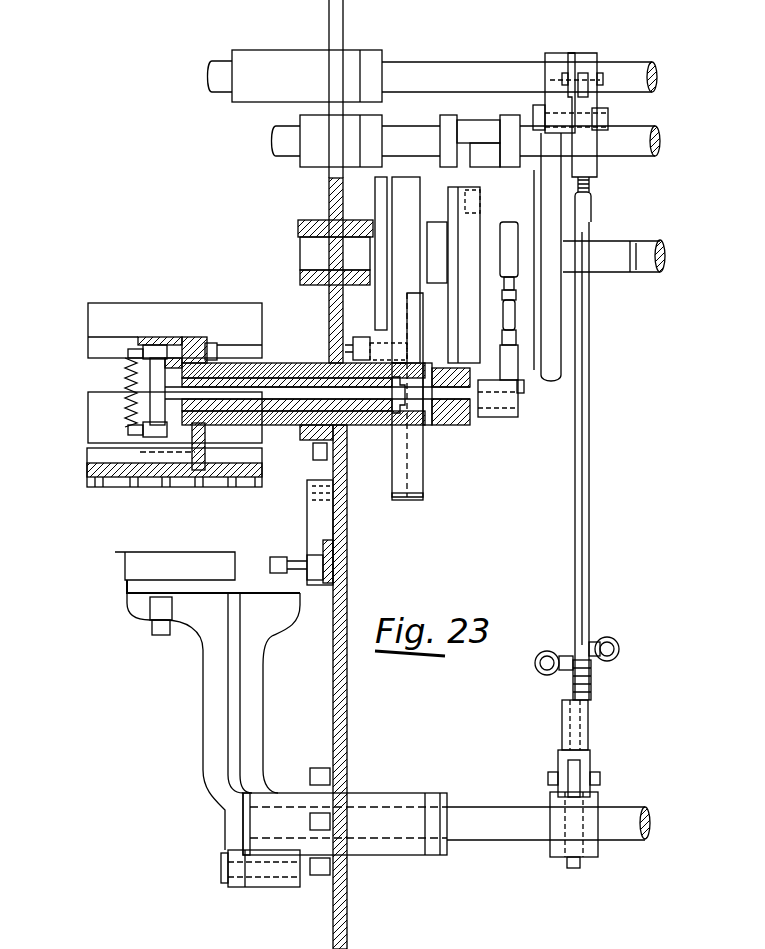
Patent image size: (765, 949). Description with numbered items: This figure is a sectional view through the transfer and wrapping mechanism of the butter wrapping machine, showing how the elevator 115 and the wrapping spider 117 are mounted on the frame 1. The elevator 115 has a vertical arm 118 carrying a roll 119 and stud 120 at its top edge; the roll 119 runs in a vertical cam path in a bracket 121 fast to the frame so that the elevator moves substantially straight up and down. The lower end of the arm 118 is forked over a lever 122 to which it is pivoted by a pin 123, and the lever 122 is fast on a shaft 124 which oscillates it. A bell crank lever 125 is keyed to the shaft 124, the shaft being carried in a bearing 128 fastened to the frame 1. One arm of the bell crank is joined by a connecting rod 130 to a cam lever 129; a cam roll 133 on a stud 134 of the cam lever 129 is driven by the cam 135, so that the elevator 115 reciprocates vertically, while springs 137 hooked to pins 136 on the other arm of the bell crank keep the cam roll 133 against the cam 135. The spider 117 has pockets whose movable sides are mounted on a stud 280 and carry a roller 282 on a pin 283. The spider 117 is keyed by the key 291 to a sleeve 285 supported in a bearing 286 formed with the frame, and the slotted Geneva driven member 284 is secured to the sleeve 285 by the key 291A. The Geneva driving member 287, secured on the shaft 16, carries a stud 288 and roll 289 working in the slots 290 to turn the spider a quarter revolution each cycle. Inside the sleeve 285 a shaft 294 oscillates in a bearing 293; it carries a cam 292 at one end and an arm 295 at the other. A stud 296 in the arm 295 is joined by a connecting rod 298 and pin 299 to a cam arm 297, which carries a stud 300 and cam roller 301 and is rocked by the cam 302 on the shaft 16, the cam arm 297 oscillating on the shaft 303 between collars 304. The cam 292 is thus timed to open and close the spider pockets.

The frame 1 is at (347, 735).
The shaft 16 is at (297, 240).
The elevator 115 is at (203, 726).
The wrapping spider 117 is at (87, 432).
The vertical arm 118 is at (267, 690).
The roll 119 is at (317, 590).
The stud 120 is at (268, 565).
The bracket 121 is at (306, 545).
The lever 122 is at (290, 793).
The pin 123 is at (222, 880).
The shaft 124 is at (500, 841).
The bell crank lever 125 is at (590, 858).
The bearing 128 is at (385, 856).
The cam lever 129 is at (577, 52).
The connecting rod 130 is at (590, 550).
The cam roll 133 is at (552, 118).
The stud 134 is at (608, 120).
The cam 135 is at (551, 388).
The pins 136 is at (562, 650).
The springs 137 is at (575, 678).
The stud 280 is at (210, 345).
The roller 282 is at (157, 343).
The pin 283 is at (135, 344).
The Geneva driven member 284 is at (422, 495).
The sleeve 285 is at (268, 360).
The bearing 286 is at (300, 362).
The Geneva driving member 287 is at (373, 193).
The stud 288 is at (355, 340).
The roll 289 is at (407, 357).
The slots 290 is at (397, 400).
The key 291 is at (187, 427).
The key 291A is at (432, 385).
The cam 292 is at (150, 378).
The bearing 293 is at (446, 426).
The shaft 294 is at (183, 337).
The arm 295 is at (505, 420).
The stud 296 is at (524, 386).
The cam arm 297 is at (591, 182).
The connecting rod 298 is at (515, 320).
The pin 299 is at (505, 268).
The stud 300 is at (592, 205).
The cam roller 301 is at (468, 198).
The cam 302 is at (490, 292).
The shaft 303 is at (655, 150).
The collars 304 is at (507, 118).